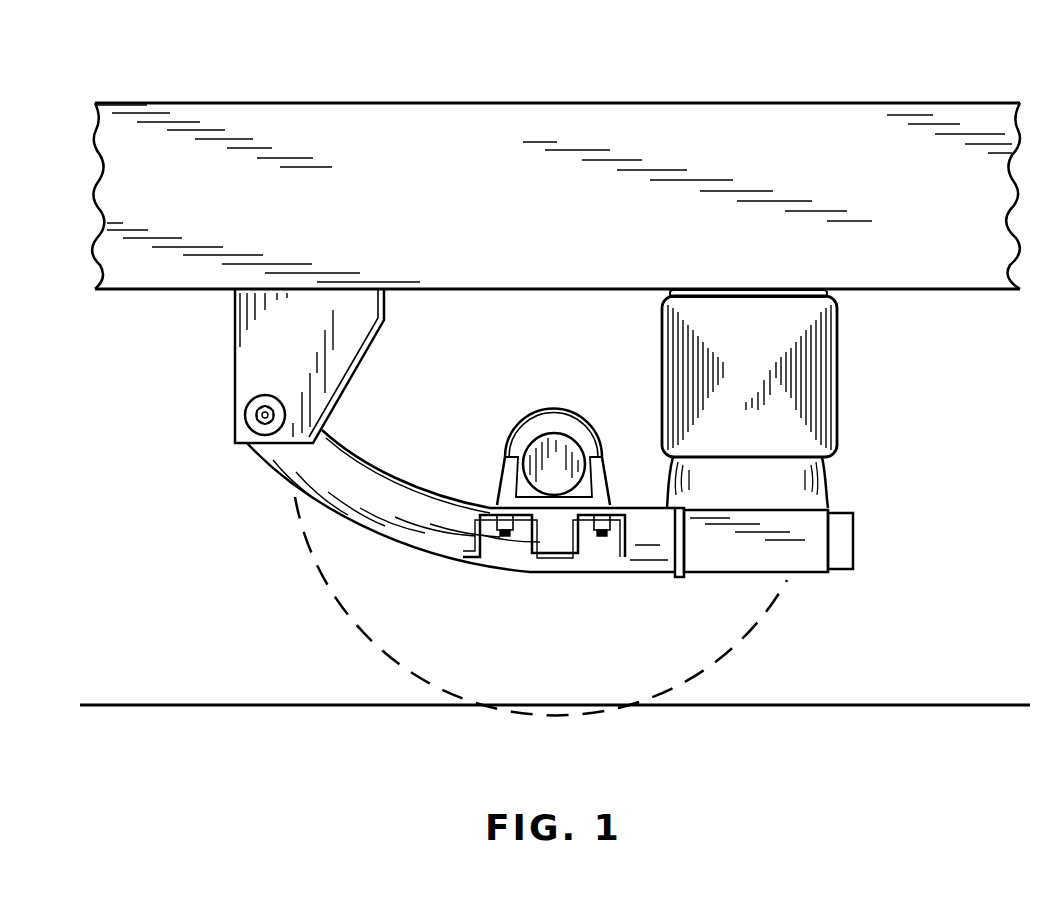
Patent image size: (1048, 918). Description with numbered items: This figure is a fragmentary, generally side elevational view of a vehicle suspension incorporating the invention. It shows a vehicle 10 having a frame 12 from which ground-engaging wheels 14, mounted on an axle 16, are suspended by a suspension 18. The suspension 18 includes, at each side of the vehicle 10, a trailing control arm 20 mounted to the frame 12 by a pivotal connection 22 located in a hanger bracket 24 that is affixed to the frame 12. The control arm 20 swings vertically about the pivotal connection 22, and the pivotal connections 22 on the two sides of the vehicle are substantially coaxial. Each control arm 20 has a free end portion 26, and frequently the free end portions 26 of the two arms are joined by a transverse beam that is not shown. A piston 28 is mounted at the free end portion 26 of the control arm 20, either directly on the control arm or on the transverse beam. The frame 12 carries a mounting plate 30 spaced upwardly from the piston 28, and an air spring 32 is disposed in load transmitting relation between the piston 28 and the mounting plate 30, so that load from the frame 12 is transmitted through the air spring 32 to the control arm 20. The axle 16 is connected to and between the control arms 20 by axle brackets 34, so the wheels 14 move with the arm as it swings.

The vehicle 10 is at (929, 90).
The frame 12 is at (538, 204).
The ground-engaging wheels 14 is at (698, 628).
The axle 16 is at (534, 447).
The suspension 18 is at (274, 499).
The trailing control arm 20 is at (362, 485).
The pivotal connection 22 is at (250, 407).
The hanger bracket 24 is at (342, 330).
The free end portion 26 is at (797, 545).
The piston 28 is at (771, 487).
The mounting plate 30 is at (803, 298).
The air spring 32 is at (764, 372).
The axle bracket 34 is at (596, 455).